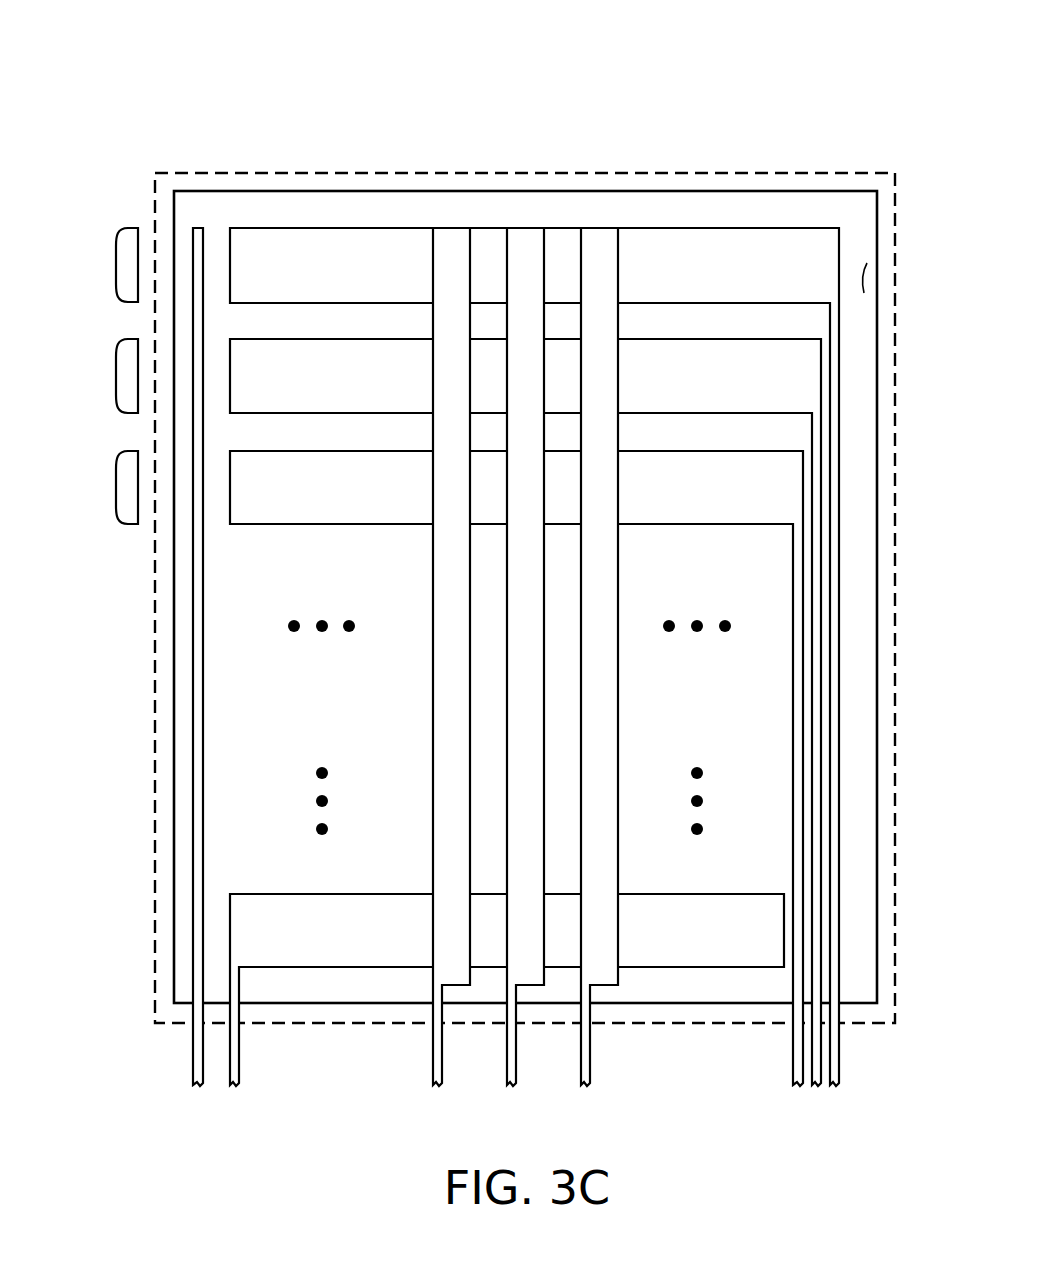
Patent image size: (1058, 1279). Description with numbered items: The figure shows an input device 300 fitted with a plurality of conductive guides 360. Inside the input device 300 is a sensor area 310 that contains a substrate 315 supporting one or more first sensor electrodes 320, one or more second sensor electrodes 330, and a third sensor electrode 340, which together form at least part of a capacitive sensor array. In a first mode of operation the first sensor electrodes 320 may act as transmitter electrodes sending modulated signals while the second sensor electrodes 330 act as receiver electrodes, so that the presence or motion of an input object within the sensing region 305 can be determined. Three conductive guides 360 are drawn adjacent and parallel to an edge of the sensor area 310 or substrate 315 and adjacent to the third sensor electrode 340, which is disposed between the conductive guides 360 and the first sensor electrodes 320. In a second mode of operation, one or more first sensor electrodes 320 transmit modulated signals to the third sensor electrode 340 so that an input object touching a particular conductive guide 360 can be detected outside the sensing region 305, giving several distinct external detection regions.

The input device 300 is at (785, 62).
The sensing region 305 is at (868, 172).
The sensor area 310 is at (747, 190).
The substrate 315 is at (866, 277).
The first sensor electrodes 320 is at (705, 279).
The second sensor electrodes 330 is at (441, 255).
The third sensor electrode 340 is at (192, 637).
The conductive guides 360 is at (116, 255).